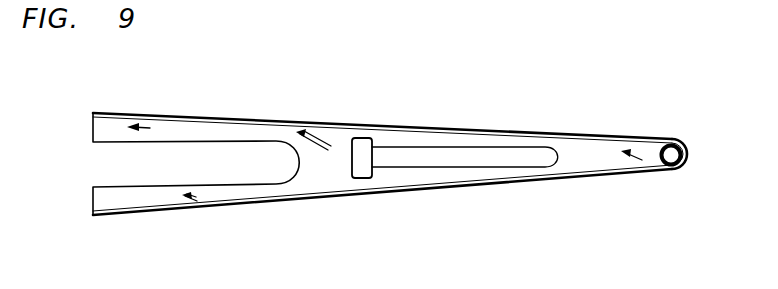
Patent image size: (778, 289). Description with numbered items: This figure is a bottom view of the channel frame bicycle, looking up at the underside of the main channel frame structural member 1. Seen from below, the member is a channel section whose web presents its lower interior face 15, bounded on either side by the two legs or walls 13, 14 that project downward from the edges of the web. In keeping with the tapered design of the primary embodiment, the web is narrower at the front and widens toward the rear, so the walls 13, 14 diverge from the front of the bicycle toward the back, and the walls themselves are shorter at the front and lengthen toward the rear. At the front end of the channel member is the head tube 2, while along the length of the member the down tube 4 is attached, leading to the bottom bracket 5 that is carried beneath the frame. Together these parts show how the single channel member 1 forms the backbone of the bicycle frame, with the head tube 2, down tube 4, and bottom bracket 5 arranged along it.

The main channel frame structural member 1 is at (610, 148).
The head tube 2 is at (672, 171).
The down tube 4 is at (531, 158).
The bottom bracket 5 is at (360, 140).
The leg or wall 13 is at (165, 213).
The leg or wall 14 is at (185, 118).
The lower interior face 15 is at (268, 193).